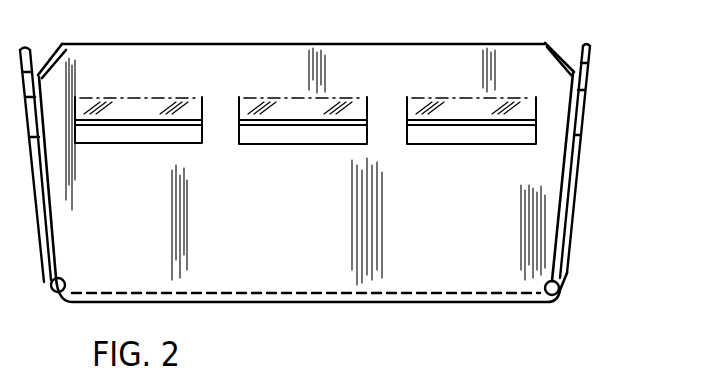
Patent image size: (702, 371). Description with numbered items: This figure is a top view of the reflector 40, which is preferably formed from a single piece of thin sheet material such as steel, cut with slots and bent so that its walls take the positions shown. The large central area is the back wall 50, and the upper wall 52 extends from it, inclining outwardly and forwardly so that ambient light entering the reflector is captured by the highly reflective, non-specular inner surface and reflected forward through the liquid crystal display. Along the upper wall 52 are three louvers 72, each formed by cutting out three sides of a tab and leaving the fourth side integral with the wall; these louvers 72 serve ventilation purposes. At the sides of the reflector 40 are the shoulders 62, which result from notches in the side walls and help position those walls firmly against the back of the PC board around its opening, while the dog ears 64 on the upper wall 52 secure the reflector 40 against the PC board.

The reflector 40 is at (579, 207).
The back wall 50 is at (461, 303).
The upper wall 52 is at (302, 200).
The shoulders 62 is at (583, 113).
The dog ears 64 is at (55, 56).
The louvers 72 is at (140, 112).